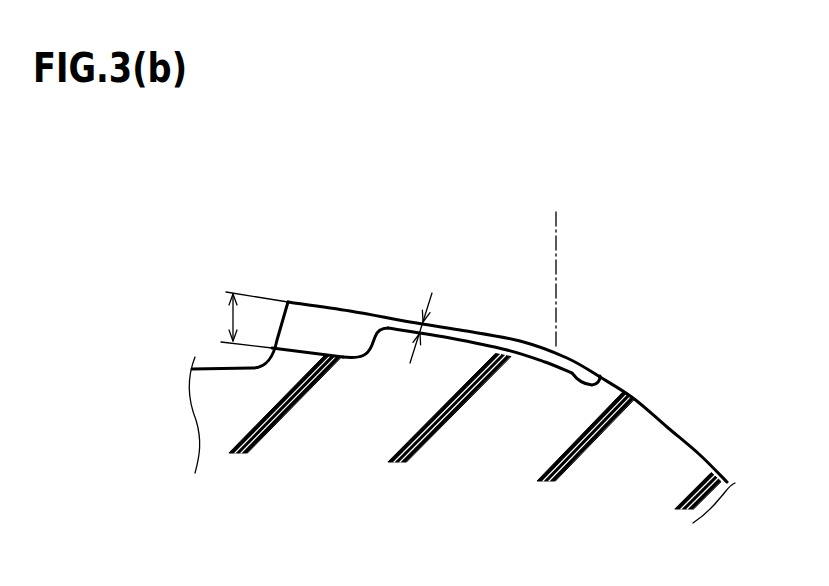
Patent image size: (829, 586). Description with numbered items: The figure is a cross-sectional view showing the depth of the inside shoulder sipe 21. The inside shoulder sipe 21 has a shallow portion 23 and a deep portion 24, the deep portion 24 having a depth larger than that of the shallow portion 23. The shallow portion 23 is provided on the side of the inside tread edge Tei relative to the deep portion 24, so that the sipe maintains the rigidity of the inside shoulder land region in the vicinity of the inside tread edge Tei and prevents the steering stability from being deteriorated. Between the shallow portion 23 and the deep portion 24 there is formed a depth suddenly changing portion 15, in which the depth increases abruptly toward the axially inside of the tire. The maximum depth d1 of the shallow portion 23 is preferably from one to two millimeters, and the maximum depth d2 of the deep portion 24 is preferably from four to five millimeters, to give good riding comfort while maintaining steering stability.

The inside shoulder sipe 21 is at (487, 162).
The deep portion 24 is at (335, 333).
The shallow portion 23 is at (508, 345).
The depth suddenly changing portion 15 is at (367, 333).
The maximum depth of the shallow portion d1 is at (428, 320).
The maximum depth of the deep portion d2 is at (236, 320).
The inside tread edge Tei is at (549, 264).